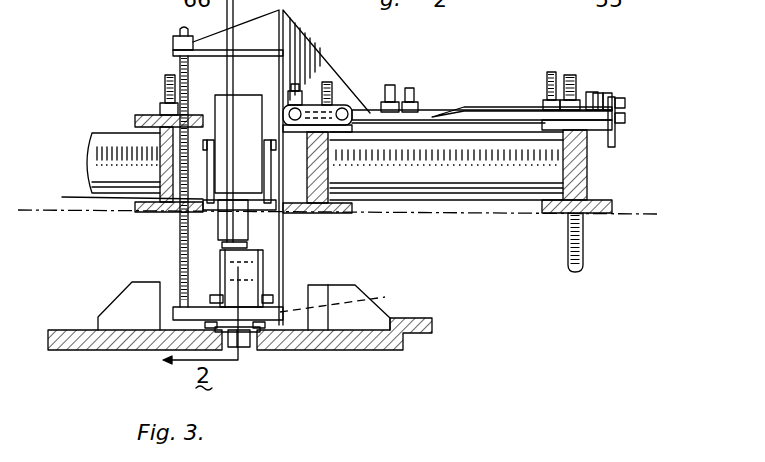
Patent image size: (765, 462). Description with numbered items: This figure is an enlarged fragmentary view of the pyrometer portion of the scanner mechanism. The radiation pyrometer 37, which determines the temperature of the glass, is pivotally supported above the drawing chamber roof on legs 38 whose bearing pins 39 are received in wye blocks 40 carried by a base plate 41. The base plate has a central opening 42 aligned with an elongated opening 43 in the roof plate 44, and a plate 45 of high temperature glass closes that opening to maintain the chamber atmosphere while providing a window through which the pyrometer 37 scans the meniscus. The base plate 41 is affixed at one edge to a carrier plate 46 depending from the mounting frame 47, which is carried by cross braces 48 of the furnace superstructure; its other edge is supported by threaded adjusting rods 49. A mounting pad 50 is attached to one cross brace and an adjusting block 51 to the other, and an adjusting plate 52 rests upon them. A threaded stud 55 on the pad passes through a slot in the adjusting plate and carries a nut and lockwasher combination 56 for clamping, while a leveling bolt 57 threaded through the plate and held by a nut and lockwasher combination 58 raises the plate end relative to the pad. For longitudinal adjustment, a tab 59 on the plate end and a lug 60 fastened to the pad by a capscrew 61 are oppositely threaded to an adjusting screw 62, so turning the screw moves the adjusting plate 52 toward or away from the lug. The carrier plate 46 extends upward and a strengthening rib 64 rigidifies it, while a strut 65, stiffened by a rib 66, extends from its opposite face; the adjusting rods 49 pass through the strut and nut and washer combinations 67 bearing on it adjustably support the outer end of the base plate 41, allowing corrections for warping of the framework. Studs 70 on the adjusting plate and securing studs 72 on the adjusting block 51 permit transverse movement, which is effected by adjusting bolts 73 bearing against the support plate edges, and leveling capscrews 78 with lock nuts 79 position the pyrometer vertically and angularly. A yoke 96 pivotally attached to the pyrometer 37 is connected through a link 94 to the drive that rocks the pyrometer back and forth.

The radiation pyrometer 37 is at (242, 107).
The legs 38 is at (213, 300).
The bearing pins 39 is at (133, 288).
The wye blocks 40 is at (207, 298).
The base plate 41 is at (202, 315).
The central opening 42 is at (370, 300).
The elongated opening 43 is at (263, 343).
The roof plate 44 is at (347, 350).
The plate of high temperature glass 45 is at (240, 327).
The carrier plate 46 is at (283, 240).
The mounting frame 47 is at (435, 104).
The cross braces 48 is at (135, 118).
The threaded adjusting rods 49 is at (173, 62).
The mounting pad 50 is at (545, 118).
The adjusting block 51 is at (337, 102).
The adjusting plate 52 is at (463, 107).
The threaded stud 55 is at (548, 73).
The nut and lockwasher combination 56 is at (545, 100).
The leveling bolt 57 is at (572, 75).
The nut and lockwasher combination 58 is at (589, 92).
The tab 59 is at (596, 93).
The lug 60 is at (613, 93).
The capscrew 61 is at (625, 118).
The adjusting screw 62 is at (620, 100).
The strengthening rib 64 is at (322, 63).
The strut 65 is at (207, 56).
The rib 66 is at (213, 38).
The nut and washer combinations 67 is at (173, 40).
The studs 70 is at (390, 88).
The securing studs 72 is at (328, 80).
The adjusting bolts 73 is at (347, 108).
The leveling capscrews 78 is at (297, 90).
The lock nuts 79 is at (448, 129).
The link 94 is at (240, 227).
The yoke 96 is at (116, 199).